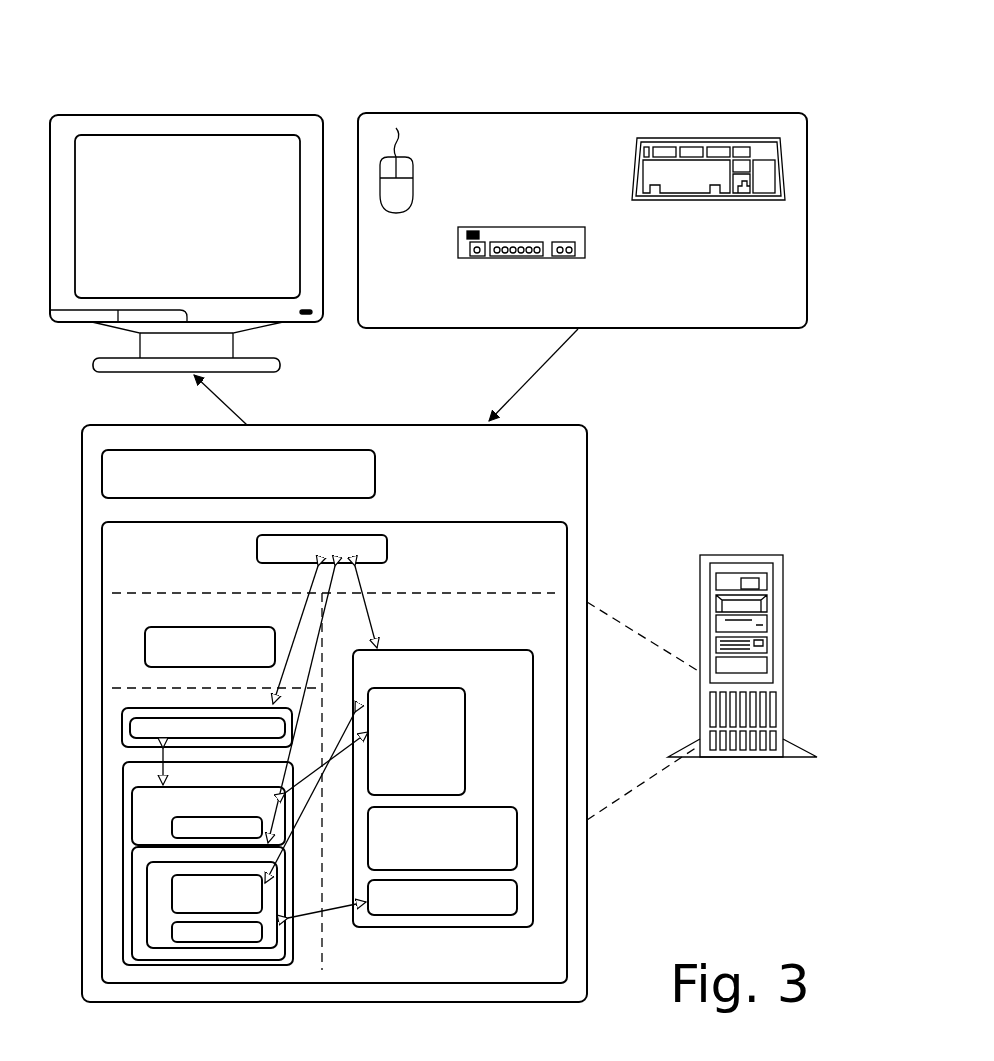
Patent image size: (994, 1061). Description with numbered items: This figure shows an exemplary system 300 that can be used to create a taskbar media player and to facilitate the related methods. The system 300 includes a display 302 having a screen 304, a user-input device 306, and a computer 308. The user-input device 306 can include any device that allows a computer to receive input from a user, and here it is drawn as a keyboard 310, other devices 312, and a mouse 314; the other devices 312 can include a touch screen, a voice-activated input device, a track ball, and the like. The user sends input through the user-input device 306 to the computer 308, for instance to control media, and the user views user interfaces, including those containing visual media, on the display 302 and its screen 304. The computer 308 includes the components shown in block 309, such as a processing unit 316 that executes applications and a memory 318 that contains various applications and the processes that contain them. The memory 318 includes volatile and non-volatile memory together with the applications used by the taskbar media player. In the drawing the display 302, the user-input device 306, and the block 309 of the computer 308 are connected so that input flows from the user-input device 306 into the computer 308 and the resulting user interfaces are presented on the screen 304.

The system 300 is at (708, 56).
The display 302 is at (183, 113).
The screen 304 is at (287, 163).
The user-input device 306 is at (573, 113).
The computer 308 is at (700, 579).
The block 309 is at (571, 448).
The keyboard 310 is at (632, 195).
The other devices 312 is at (585, 243).
The mouse 314 is at (413, 168).
The processing unit 316 is at (137, 493).
The memory 318 is at (554, 545).